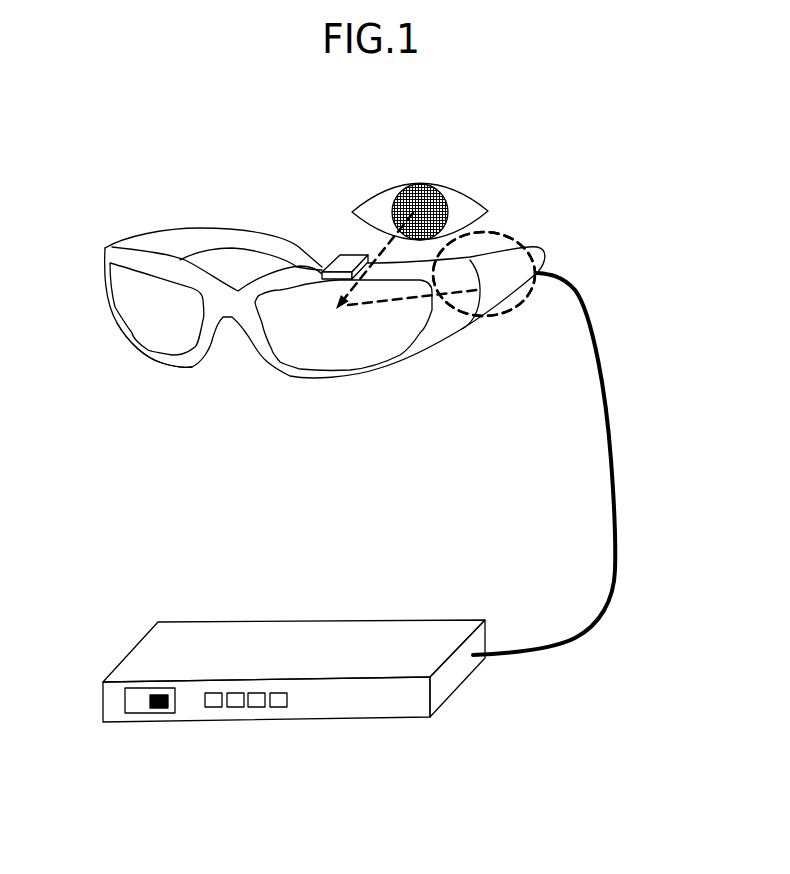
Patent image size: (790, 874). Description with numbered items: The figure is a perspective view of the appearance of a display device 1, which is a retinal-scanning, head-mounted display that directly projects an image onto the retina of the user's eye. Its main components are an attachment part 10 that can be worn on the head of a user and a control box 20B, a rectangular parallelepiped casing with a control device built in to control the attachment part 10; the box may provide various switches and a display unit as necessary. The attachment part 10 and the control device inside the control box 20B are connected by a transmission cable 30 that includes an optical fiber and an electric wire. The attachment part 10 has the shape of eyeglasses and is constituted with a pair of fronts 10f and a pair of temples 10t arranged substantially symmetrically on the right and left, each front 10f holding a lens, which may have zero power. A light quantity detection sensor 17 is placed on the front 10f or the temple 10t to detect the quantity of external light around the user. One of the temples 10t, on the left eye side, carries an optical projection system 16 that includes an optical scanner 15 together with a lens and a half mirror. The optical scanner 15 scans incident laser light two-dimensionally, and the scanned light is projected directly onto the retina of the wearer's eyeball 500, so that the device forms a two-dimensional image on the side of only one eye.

The display device 1 is at (88, 110).
The attachment part 10 is at (101, 222).
The temple 10t is at (175, 229).
The front 10f is at (170, 364).
The light quantity detection sensor 17 is at (341, 263).
The eyeball 500 is at (463, 193).
The optical scanner 15 is at (516, 239).
The optical projection system 16 is at (516, 239).
The transmission cable 30 is at (617, 486).
The control box 20B is at (177, 612).